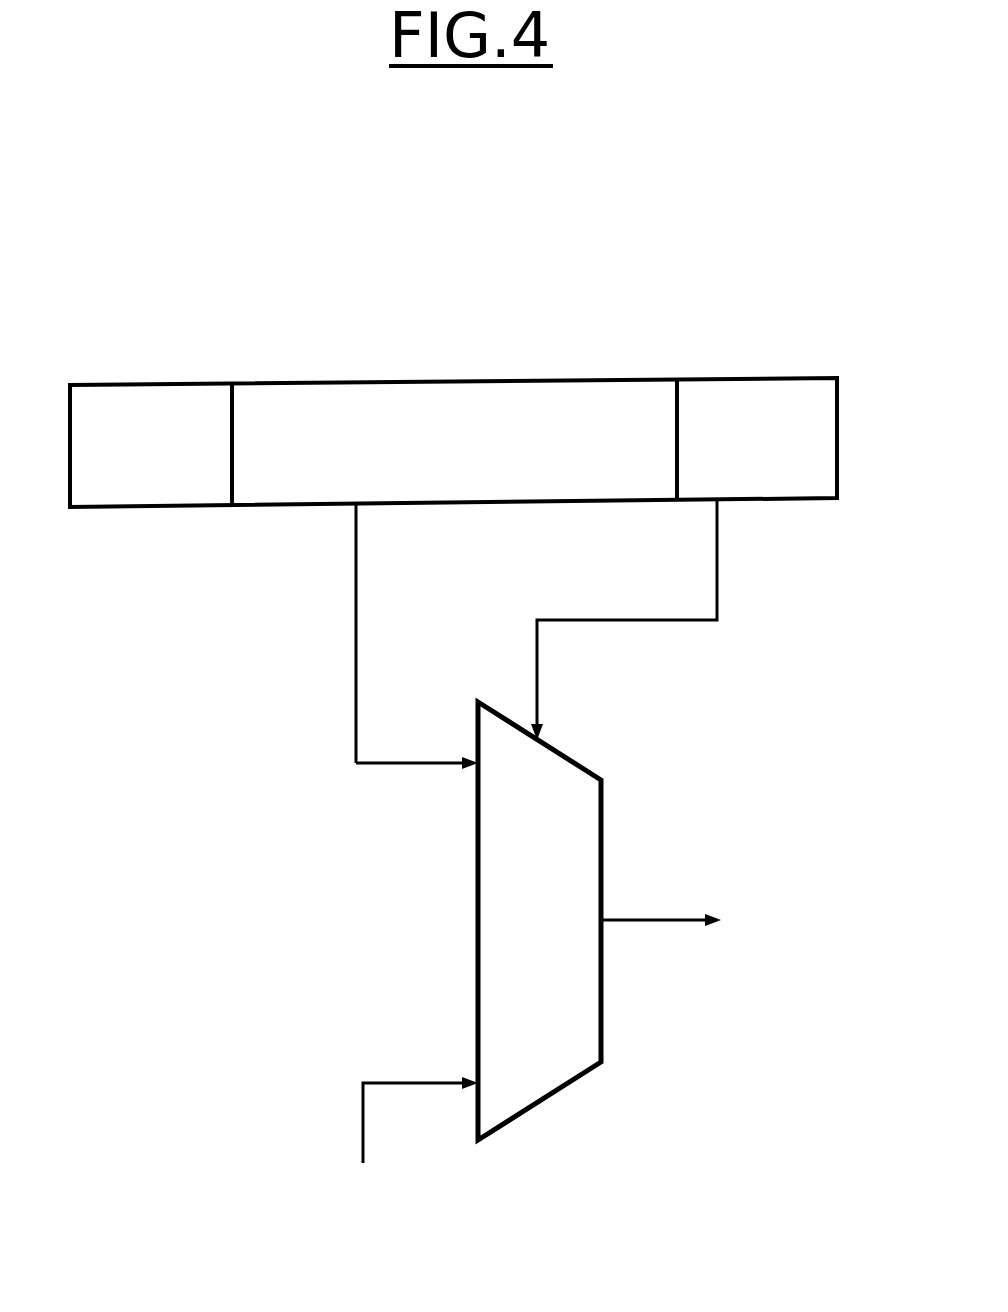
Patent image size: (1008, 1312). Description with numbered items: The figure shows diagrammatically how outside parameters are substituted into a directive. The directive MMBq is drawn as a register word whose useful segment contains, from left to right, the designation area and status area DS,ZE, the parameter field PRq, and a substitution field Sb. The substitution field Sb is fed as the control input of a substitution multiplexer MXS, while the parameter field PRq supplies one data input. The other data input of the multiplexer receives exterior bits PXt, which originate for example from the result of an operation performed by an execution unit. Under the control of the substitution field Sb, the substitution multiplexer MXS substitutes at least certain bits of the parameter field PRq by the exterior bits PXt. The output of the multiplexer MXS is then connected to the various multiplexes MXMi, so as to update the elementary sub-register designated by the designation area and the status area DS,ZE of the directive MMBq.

The directive MMBq is at (538, 372).
The designation area and status area DS,ZE is at (162, 445).
The parameter field PRq is at (424, 594).
The substitution field Sb is at (655, 560).
The substitution multiplexer MXS is at (544, 1108).
The exterior bits PXt is at (407, 1143).
The multiplexes MXMi is at (757, 912).